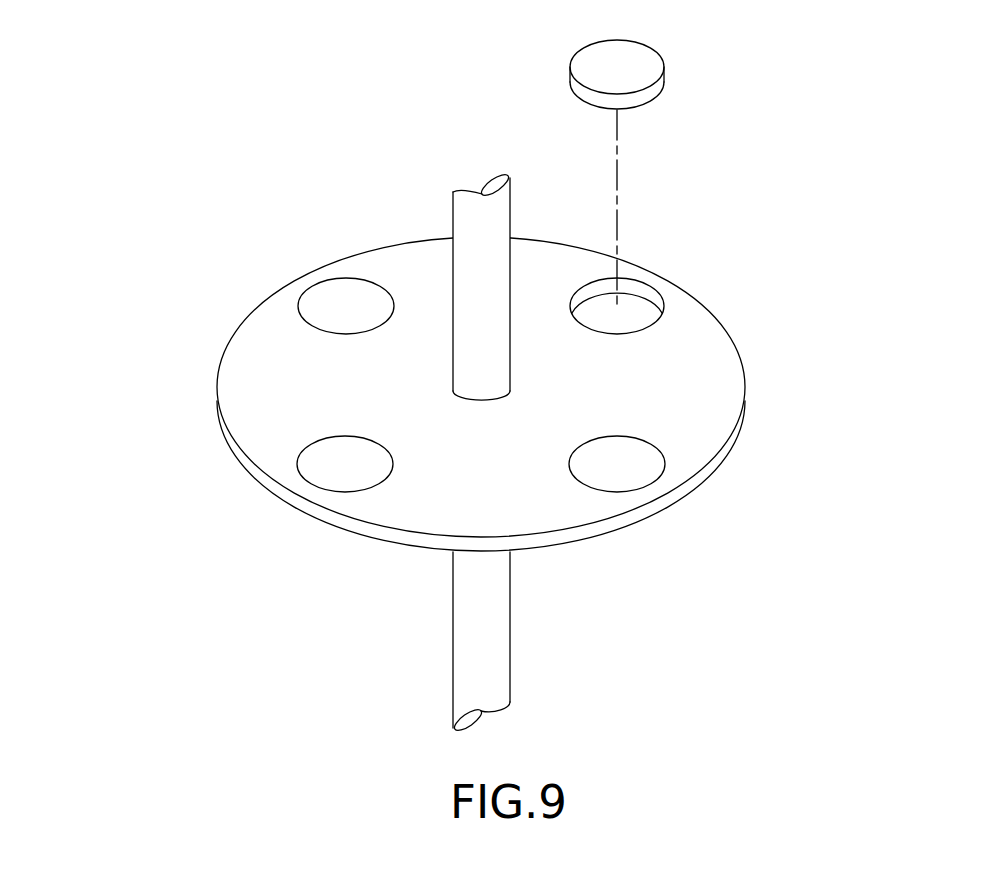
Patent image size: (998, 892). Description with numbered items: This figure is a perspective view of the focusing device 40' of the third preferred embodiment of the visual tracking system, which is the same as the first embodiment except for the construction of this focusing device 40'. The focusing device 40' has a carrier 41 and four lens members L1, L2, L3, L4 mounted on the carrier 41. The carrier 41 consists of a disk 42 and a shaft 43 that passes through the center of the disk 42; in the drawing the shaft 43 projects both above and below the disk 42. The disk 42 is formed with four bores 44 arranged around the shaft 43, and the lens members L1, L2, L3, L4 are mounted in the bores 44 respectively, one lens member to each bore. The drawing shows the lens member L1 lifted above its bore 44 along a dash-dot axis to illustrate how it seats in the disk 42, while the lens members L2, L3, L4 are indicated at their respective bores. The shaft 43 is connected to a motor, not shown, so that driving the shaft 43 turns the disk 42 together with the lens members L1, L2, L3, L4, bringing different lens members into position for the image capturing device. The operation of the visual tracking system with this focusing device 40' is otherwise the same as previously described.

The focusing device 40' is at (802, 163).
The carrier 41 is at (752, 396).
The disk 42 is at (433, 495).
The shaft 43 is at (467, 272).
The bores 44 is at (637, 313).
The lens member L1 is at (652, 57).
The lens member L2 is at (620, 478).
The lens member L3 is at (332, 466).
The lens member L4 is at (343, 305).